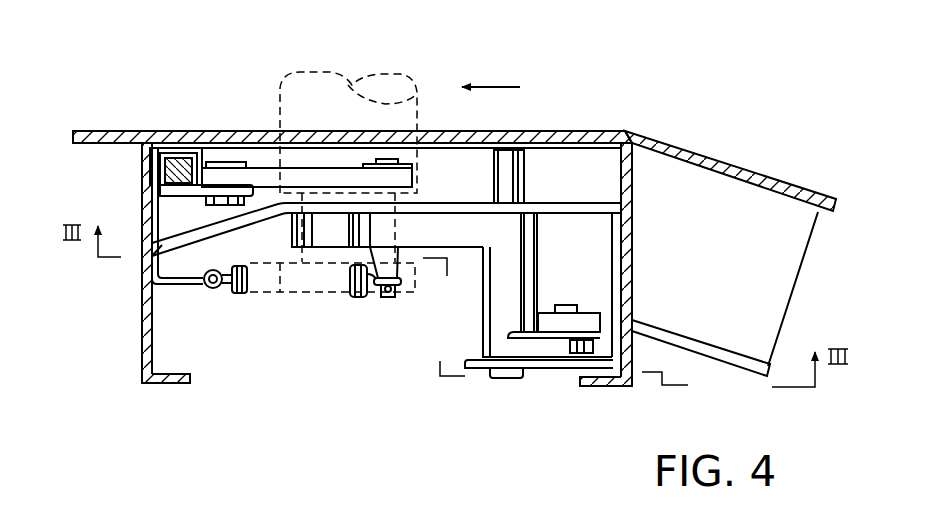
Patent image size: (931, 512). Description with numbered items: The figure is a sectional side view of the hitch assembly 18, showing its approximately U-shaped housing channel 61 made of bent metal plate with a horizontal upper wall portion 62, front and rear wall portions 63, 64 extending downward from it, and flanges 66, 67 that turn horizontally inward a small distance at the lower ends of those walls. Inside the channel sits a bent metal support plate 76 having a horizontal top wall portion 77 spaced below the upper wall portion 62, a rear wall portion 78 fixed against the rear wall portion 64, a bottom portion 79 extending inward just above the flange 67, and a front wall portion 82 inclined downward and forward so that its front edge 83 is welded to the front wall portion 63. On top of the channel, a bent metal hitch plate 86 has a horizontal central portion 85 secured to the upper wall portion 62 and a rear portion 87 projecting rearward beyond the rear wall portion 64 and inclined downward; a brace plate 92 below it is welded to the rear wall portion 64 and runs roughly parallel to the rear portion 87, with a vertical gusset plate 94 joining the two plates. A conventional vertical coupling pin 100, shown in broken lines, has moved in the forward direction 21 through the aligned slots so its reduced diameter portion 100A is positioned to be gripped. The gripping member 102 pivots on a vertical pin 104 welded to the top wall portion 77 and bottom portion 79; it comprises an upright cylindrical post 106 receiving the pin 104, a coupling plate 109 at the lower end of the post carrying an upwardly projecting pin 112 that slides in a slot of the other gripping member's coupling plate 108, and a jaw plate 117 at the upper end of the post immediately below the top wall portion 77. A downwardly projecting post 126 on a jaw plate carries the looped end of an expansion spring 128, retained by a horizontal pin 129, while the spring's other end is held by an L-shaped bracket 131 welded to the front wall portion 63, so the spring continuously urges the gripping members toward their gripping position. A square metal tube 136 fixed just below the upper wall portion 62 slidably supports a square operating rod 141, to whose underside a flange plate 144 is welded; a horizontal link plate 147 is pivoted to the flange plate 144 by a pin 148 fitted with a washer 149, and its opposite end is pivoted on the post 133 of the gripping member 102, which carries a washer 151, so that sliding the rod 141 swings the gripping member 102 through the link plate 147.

The hitch assembly 18 is at (675, 112).
The forward direction 21 is at (494, 87).
The housing channel 61 is at (134, 355).
The upper wall portion 62 is at (580, 145).
The front wall portion 63 is at (140, 328).
The rear wall portion 64 is at (633, 270).
The flange 66 is at (175, 384).
The flange 67 is at (600, 386).
The support plate 76 is at (623, 182).
The top wall portion 77 is at (595, 195).
The rear wall portion 78 is at (614, 227).
The bottom portion 79 is at (472, 369).
The front wall portion 82 is at (170, 252).
The front edge 83 is at (148, 242).
The central portion 85 is at (506, 135).
The hitch plate 86 is at (106, 124).
The rear portion 87 is at (743, 177).
The brace plate 92 is at (735, 365).
The gusset plate 94 is at (783, 268).
The coupling pin 100 is at (388, 72).
The reduced diameter portion 100A is at (300, 257).
The gripping member 102 is at (478, 306).
The pin 104 is at (514, 172).
The post 106 is at (521, 266).
The coupling plate 108 is at (547, 321).
The coupling plate 109 is at (542, 348).
The pin 112 is at (567, 305).
The jaw plate 117 is at (450, 228).
The post 126 is at (388, 298).
The expansion spring 128 is at (241, 295).
The horizontal pin 129 is at (378, 293).
The L-shaped bracket 131 is at (172, 282).
The post 133 is at (390, 163).
The metal tube 136 is at (162, 152).
The operating rod 141 is at (174, 173).
The flange plate 144 is at (170, 190).
The link plate 147 is at (267, 177).
The pin 148 is at (223, 205).
The washer 149 is at (251, 163).
The washer 151 is at (414, 174).